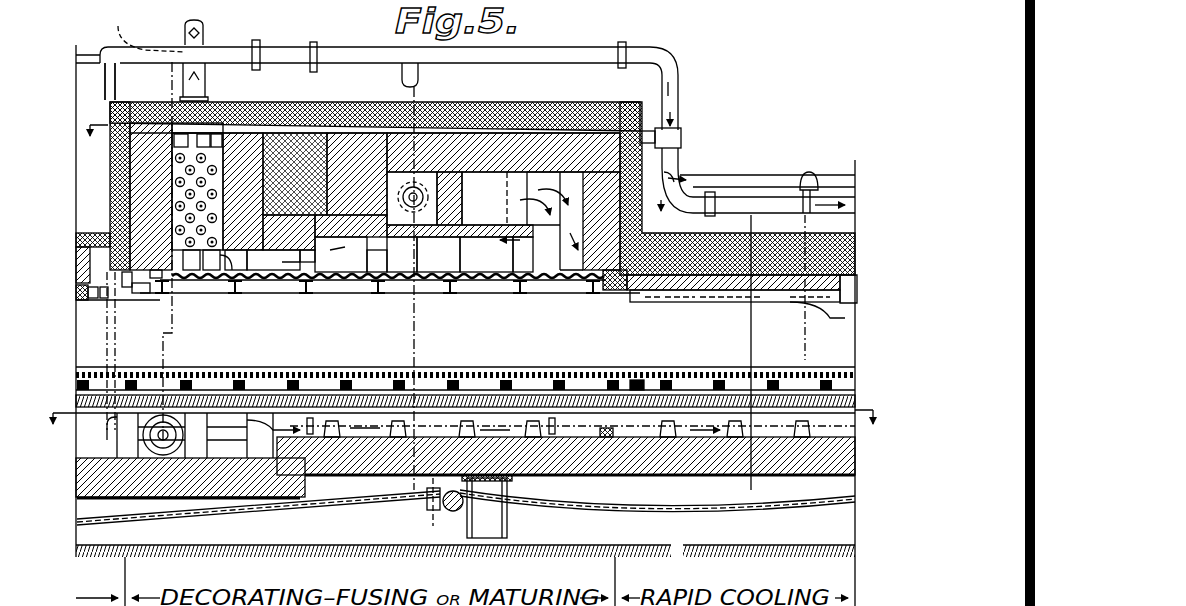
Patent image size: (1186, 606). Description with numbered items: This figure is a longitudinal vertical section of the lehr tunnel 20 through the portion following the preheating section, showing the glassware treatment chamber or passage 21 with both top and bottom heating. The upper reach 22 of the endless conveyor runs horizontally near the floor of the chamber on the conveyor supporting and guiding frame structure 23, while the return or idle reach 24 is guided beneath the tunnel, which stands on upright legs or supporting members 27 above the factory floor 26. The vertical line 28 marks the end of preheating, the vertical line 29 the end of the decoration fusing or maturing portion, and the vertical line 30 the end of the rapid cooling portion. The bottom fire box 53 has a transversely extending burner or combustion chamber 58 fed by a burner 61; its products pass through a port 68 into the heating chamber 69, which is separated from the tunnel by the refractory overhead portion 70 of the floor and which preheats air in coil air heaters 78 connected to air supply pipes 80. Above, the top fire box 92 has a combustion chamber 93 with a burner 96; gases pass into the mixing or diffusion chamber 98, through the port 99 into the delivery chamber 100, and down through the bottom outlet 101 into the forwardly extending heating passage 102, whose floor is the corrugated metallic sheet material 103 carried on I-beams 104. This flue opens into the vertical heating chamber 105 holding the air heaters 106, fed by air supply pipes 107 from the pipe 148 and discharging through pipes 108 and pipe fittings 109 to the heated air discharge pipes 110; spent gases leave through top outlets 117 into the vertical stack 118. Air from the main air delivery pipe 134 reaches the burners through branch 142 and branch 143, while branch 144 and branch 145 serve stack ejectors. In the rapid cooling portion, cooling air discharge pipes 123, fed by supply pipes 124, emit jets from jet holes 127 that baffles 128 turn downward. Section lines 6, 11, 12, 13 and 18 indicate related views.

The tunnel 20 is at (580, 40).
The branch 142 is at (103, 75).
The branch 144 is at (141, 28).
The main air delivery pipe 134 is at (205, 45).
The vertical stack 118 is at (215, 60).
The top outlet 117 is at (108, 110).
The branch 143 is at (345, 58).
The air supply pipe 107 is at (195, 133).
The heating chamber 105 is at (232, 128).
The air heater 106 is at (172, 185).
The burner or combustion chamber 93 is at (420, 172).
The top fire box 92 is at (464, 100).
The mixing or diffusion chamber 98 is at (480, 180).
The port 99 is at (522, 183).
The bottom outlet 101 is at (512, 237).
The corrugated metallic sheet material 103 is at (345, 272).
The burner 96 is at (425, 200).
The heating passage 102 is at (435, 245).
The I-beam 104 is at (240, 272).
The pipe 108 is at (178, 270).
The baffle 128 is at (630, 300).
The jet hole 127 is at (680, 300).
The cooling air discharge pipe 123 is at (707, 300).
The supply pipe 124 is at (842, 312).
The air supply pipe 80 is at (803, 352).
The delivery chamber 100 is at (662, 170).
The pipe 148 is at (720, 175).
The branch 145 is at (752, 197).
The heated air discharge pipe 110 is at (78, 291).
The pipe fitting 109 is at (117, 283).
The section line 12 is at (410, 87).
The section line 18 is at (169, 82).
The section line 13 is at (748, 221).
The section line 11 is at (385, 178).
The section line 6 is at (462, 435).
The glassware treatment chamber or passage 21 is at (465, 365).
The upper reach 22 is at (312, 372).
The conveyor supporting and guiding frame structure 23 is at (352, 384).
The overhead portion of tunnel chamber floor 70 is at (637, 395).
The burner or combustion chamber 58 is at (190, 395).
The port 68 is at (262, 395).
The burner 61 is at (203, 442).
The heating chamber 69 is at (645, 470).
The coil air heater 78 is at (312, 472).
The bottom fire box 53 is at (233, 478).
The factory floor 26 is at (220, 540).
The return or idle reach 24 is at (618, 510).
The upright legs or supporting members 27 is at (505, 520).
The vertical line 28 is at (125, 573).
The vertical line 29 is at (615, 565).
The vertical line 30 is at (855, 563).